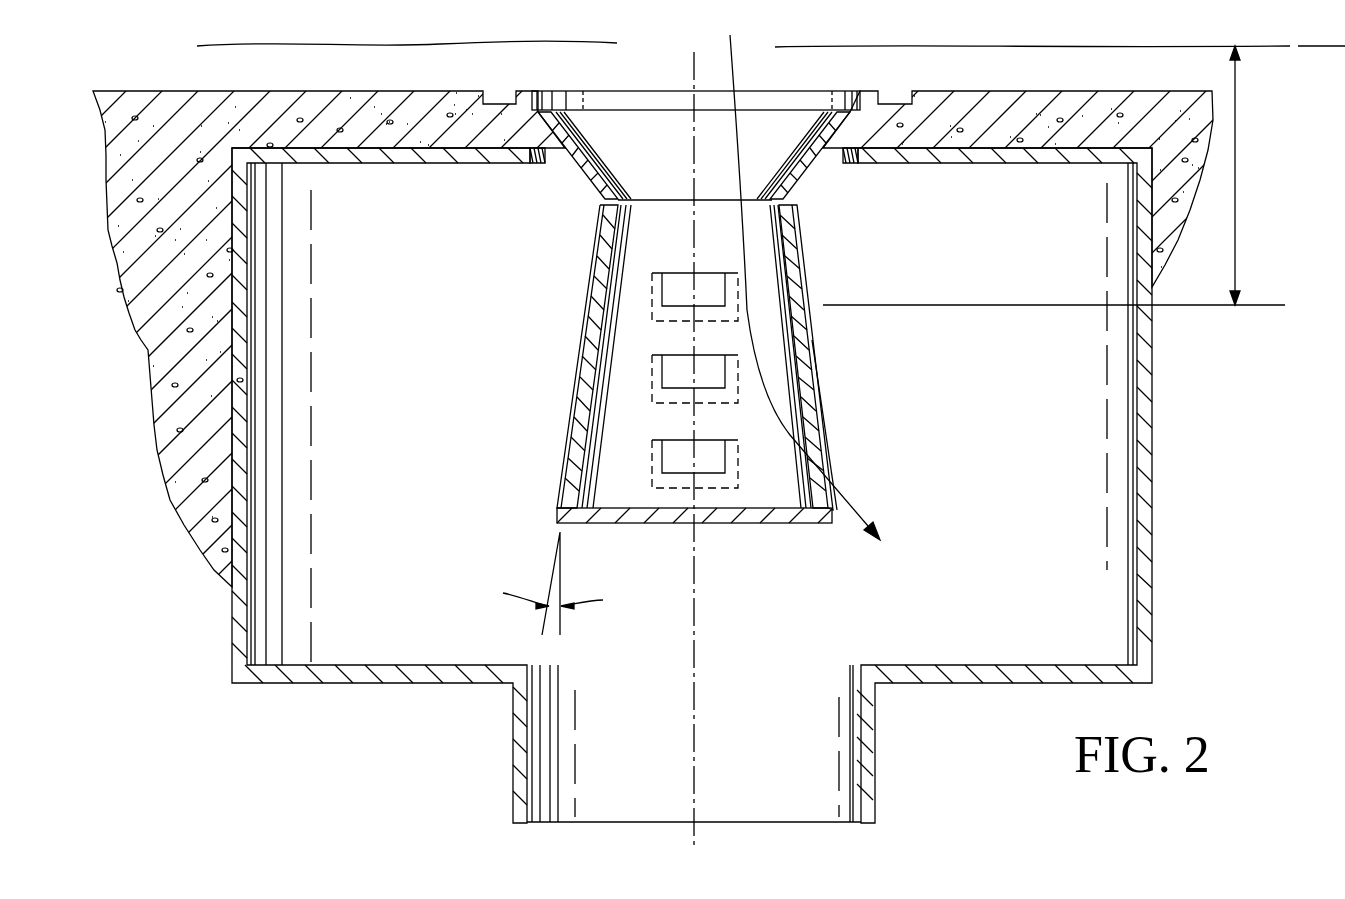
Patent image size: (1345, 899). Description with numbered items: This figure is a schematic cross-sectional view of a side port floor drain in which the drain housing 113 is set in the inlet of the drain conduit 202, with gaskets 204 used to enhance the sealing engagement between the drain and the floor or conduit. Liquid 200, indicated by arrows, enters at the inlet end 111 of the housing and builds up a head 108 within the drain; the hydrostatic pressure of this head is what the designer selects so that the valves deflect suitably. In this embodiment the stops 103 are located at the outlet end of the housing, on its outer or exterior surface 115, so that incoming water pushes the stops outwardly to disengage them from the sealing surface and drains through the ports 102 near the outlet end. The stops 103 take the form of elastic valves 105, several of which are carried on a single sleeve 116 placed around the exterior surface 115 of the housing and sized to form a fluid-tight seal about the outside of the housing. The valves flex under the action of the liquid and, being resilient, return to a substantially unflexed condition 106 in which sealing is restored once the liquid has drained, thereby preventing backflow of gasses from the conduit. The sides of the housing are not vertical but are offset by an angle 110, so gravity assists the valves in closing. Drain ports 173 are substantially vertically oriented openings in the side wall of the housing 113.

The inlet end 111 is at (658, 82).
The head 108 is at (1054, 175).
The gaskets 204 is at (858, 163).
The sleeve 116 is at (796, 240).
The stops 103 is at (805, 285).
The elastic valves 105 is at (794, 155).
The drain ports 173 is at (806, 297).
The drain ports 102 is at (725, 460).
The exterior surface 115 is at (815, 523).
The unflexed condition 106 is at (833, 463).
The liquid 200 is at (857, 505).
The drain housing 113 is at (627, 523).
The angle 110 is at (572, 583).
The drain conduit 202 is at (873, 760).